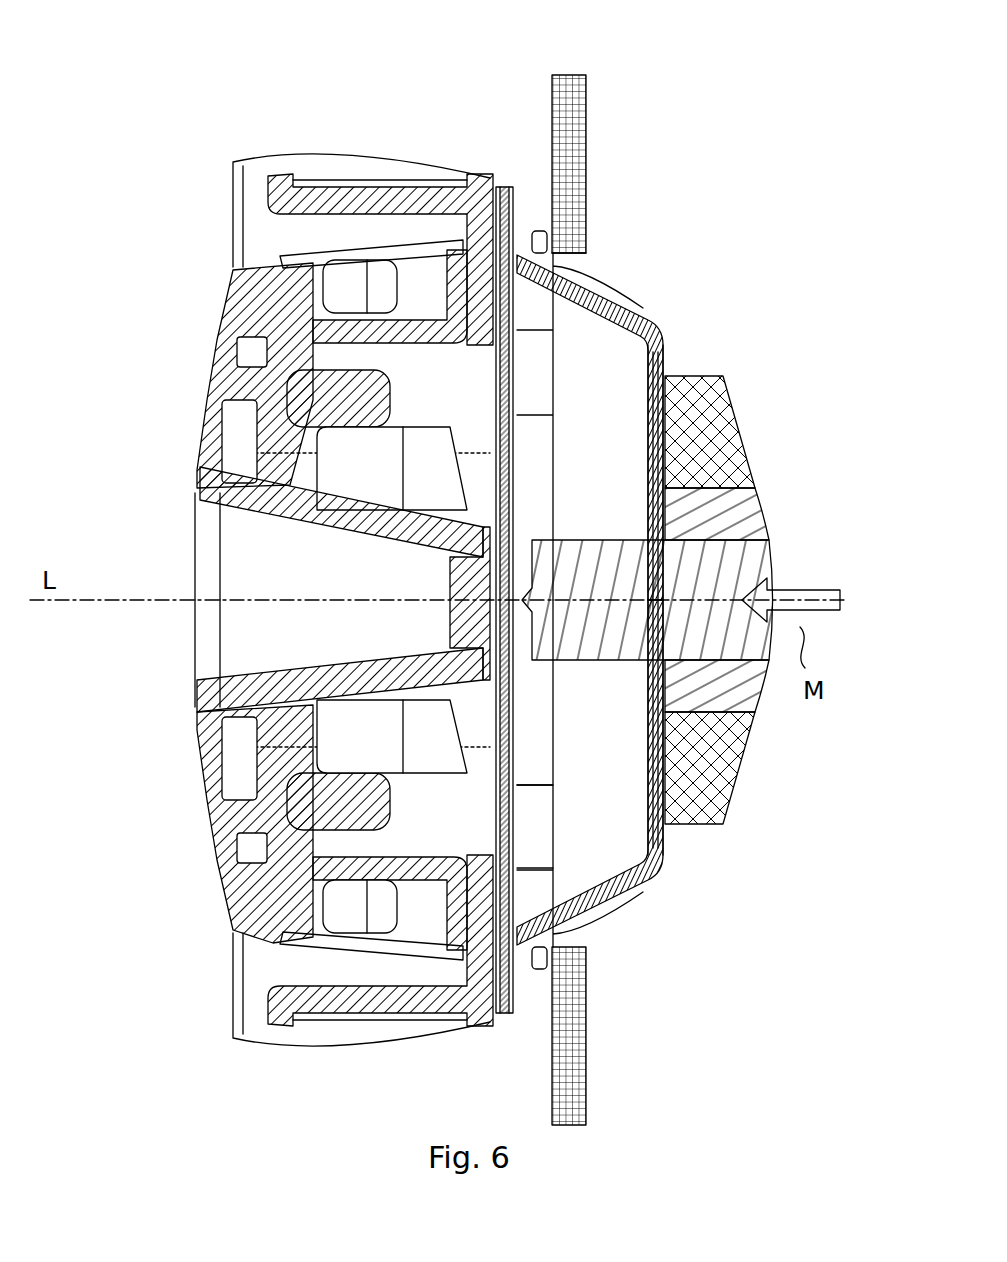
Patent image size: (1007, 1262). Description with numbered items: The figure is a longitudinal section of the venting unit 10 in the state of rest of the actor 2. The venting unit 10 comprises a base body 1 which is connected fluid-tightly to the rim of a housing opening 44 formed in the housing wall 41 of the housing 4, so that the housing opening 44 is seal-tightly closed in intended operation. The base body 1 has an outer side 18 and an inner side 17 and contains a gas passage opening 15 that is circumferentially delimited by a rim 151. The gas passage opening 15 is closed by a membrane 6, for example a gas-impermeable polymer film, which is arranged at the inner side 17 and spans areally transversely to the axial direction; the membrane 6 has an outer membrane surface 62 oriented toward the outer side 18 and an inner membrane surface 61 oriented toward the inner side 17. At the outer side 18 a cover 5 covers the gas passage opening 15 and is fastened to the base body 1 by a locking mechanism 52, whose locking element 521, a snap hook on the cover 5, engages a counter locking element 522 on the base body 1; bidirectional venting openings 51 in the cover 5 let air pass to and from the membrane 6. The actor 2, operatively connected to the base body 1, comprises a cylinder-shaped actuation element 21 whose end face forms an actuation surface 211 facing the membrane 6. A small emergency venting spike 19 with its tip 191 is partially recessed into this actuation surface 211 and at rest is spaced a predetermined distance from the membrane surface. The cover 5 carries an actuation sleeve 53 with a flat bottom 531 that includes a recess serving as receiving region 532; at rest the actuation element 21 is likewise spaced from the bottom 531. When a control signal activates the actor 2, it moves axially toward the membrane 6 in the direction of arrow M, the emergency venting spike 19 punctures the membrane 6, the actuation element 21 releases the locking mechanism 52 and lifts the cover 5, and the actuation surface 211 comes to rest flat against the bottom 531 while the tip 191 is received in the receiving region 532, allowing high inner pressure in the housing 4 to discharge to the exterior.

The venting unit 10 is at (93, 92).
The base body 1 is at (481, 184).
The housing 4 is at (589, 141).
The housing wall 41 is at (589, 1076).
The housing opening 44 is at (592, 249).
The inner side 17 is at (692, 287).
The outer membrane surface 62 is at (520, 375).
The emergency venting spike 19 is at (523, 600).
The tip 191 is at (522, 600).
The actor 2 is at (733, 393).
The membrane 6 is at (505, 466).
The actuation surface 211 is at (540, 565).
The actuation element 21 is at (680, 632).
The outer side 18 is at (218, 986).
The gas passage opening 15 is at (483, 371).
The rim 151 is at (490, 340).
The cover 5 is at (193, 478).
The bidirectional venting openings 51 is at (210, 420).
The inner membrane surface 61 is at (490, 427).
The actuation sleeve 53 is at (465, 650).
The bottom 531 is at (476, 558).
The receiving region 532 is at (483, 607).
The locking mechanism 52 is at (380, 830).
The locking element 521 is at (330, 876).
The counter locking element 522 is at (330, 800).